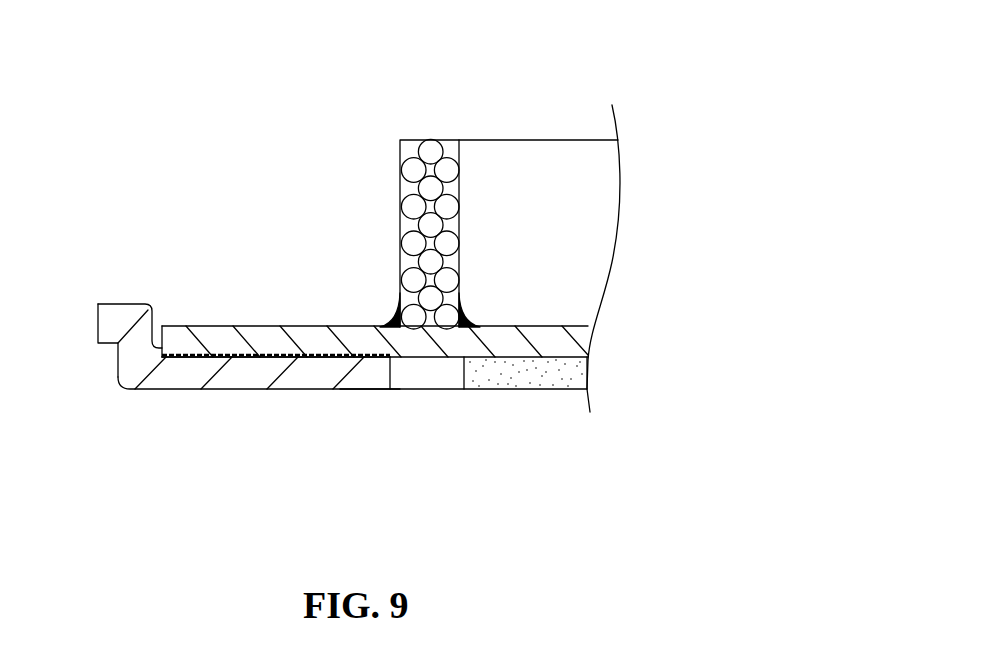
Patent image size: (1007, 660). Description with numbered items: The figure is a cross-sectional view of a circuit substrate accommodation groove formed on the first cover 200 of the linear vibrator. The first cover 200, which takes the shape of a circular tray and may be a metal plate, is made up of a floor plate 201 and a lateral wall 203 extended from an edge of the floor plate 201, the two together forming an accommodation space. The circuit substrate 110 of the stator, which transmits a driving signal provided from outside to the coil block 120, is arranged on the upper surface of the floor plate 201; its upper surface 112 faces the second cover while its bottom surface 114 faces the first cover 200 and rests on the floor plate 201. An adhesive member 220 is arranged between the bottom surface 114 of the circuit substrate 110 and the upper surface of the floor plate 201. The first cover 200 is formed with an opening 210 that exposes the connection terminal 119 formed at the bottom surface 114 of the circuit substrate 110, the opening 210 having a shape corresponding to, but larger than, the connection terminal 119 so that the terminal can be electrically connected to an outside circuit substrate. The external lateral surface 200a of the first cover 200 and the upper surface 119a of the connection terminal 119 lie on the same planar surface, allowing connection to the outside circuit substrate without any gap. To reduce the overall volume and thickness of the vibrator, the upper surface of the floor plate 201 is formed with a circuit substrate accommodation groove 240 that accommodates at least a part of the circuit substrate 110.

The circuit substrate 110 is at (375, 280).
The upper surface 112 is at (260, 326).
The bottom surface 114 is at (365, 357).
The connection terminal 119 is at (530, 373).
The upper surface of the connection terminal 119a is at (563, 390).
The coil block 120 is at (465, 175).
The first cover 200 is at (328, 372).
The external lateral surface 200a is at (350, 390).
The floor plate 201 is at (310, 382).
The lateral wall 203 is at (150, 308).
The opening 210 is at (433, 387).
The adhesive member 220 is at (278, 360).
The circuit substrate accommodation groove 240 is at (165, 350).